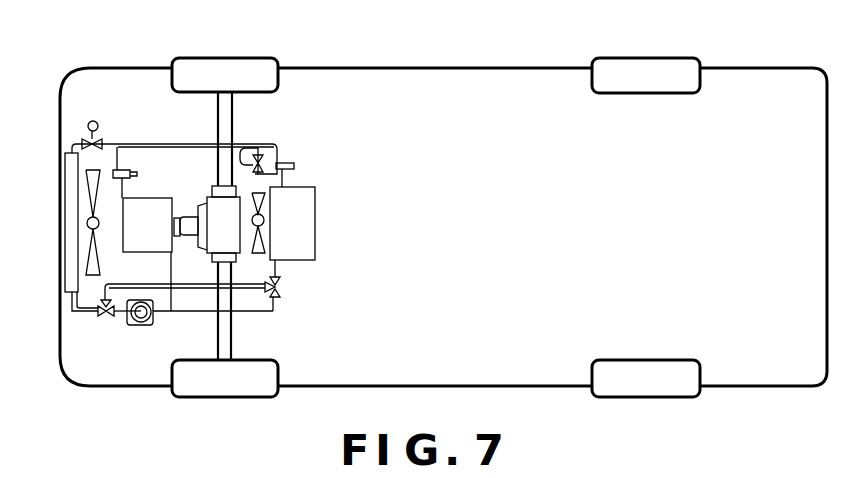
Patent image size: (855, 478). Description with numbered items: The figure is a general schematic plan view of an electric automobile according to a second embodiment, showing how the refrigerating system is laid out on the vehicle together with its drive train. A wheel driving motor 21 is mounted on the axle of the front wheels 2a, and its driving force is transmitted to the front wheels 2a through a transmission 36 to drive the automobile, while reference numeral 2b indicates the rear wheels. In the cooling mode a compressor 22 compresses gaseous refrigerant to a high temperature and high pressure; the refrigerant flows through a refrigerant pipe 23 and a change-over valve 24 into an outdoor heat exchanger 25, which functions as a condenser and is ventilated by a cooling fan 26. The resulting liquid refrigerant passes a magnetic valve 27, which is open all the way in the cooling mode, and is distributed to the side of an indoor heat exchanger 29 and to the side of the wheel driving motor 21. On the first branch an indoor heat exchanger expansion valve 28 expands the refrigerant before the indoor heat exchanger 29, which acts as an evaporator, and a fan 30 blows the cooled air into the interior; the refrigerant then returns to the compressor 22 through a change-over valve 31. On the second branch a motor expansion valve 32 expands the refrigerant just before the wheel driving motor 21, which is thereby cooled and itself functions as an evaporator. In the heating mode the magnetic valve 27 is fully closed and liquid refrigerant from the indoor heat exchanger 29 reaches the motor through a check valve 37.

The front wheels 2a is at (212, 57).
The rear wheels 2b is at (679, 72).
The wheel driving motor 21 is at (165, 208).
The compressor 22 is at (137, 327).
The refrigerant pipe 23 is at (182, 314).
The change-over valve 24 is at (103, 318).
The outdoor heat exchanger 25 is at (71, 193).
The cooling fan 26 is at (86, 269).
The magnetic valve 27 is at (97, 123).
The indoor heat exchanger expansion valve 28 is at (289, 162).
The indoor heat exchanger 29 is at (315, 210).
The fan 30 is at (265, 242).
The change-over valve 31 is at (280, 298).
The motor expansion valve 32 is at (128, 175).
The transmission 36 is at (232, 243).
The check valve 37 is at (243, 148).